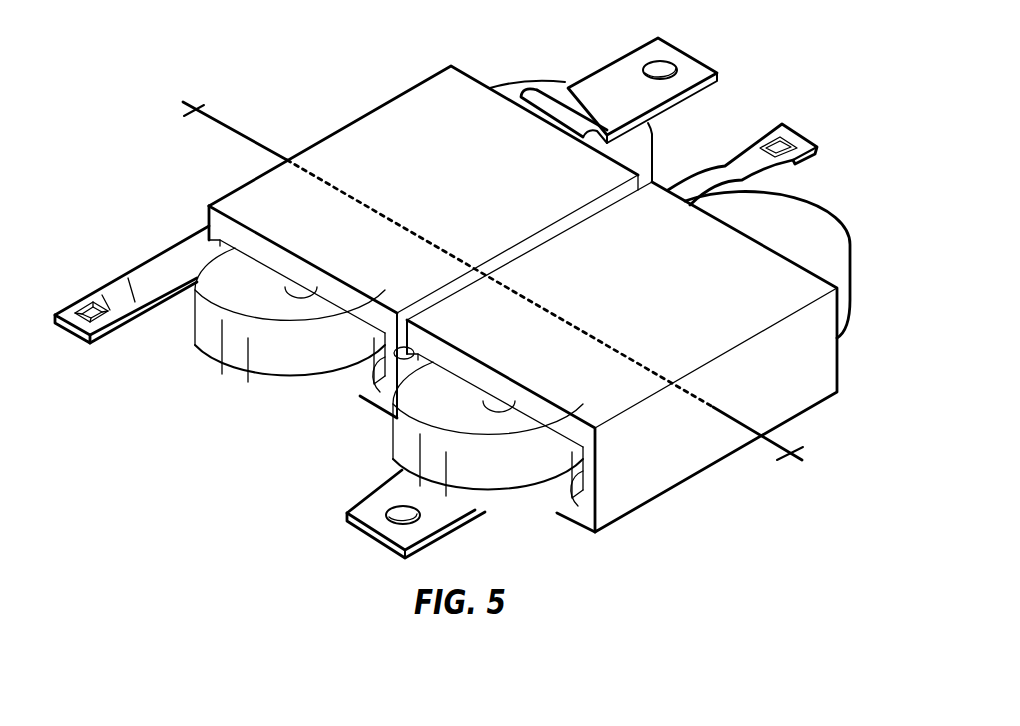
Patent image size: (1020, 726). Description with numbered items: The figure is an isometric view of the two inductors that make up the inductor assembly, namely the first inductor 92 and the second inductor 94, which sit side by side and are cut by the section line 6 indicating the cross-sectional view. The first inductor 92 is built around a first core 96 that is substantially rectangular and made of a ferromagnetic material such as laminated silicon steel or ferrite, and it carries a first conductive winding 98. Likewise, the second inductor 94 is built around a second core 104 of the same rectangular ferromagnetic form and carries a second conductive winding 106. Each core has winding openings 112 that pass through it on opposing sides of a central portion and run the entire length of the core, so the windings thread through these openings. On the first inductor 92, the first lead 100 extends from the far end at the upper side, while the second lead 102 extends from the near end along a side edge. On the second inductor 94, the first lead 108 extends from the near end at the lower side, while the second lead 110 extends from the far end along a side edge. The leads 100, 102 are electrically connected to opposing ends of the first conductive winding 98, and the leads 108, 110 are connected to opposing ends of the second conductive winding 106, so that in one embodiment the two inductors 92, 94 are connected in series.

The section line 6 is at (198, 109).
The first inductor 92 is at (354, 92).
The second inductor 94 is at (738, 476).
The first core 96 is at (208, 222).
The first conductive winding 98 is at (265, 370).
The first lead 100 is at (623, 72).
The second lead 102 is at (65, 313).
The second core 104 is at (583, 513).
The second conductive winding 106 is at (823, 240).
The first lead 108 is at (365, 530).
The second lead 110 is at (793, 138).
The winding openings 112 is at (380, 363).